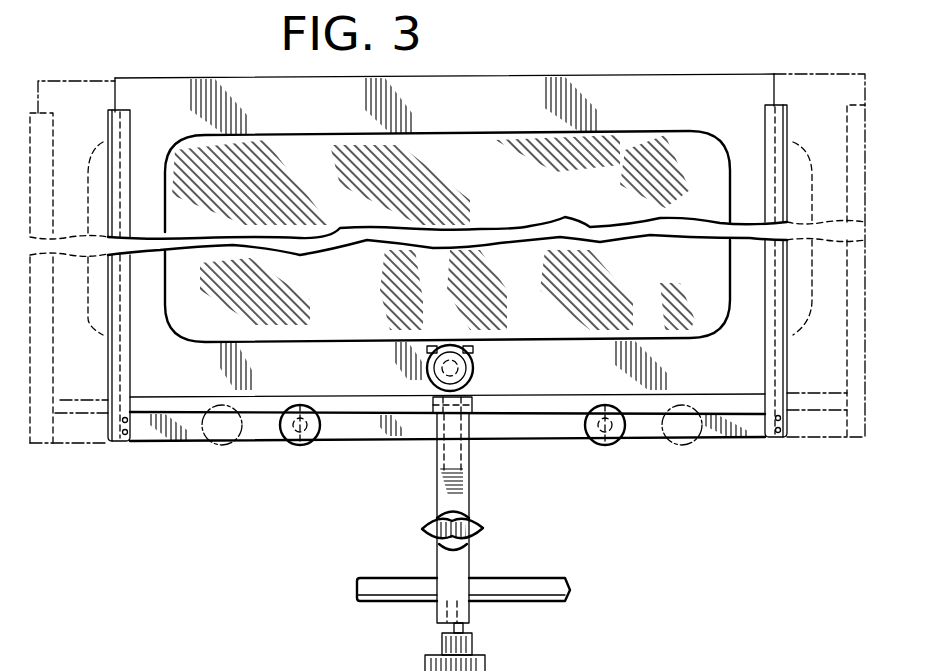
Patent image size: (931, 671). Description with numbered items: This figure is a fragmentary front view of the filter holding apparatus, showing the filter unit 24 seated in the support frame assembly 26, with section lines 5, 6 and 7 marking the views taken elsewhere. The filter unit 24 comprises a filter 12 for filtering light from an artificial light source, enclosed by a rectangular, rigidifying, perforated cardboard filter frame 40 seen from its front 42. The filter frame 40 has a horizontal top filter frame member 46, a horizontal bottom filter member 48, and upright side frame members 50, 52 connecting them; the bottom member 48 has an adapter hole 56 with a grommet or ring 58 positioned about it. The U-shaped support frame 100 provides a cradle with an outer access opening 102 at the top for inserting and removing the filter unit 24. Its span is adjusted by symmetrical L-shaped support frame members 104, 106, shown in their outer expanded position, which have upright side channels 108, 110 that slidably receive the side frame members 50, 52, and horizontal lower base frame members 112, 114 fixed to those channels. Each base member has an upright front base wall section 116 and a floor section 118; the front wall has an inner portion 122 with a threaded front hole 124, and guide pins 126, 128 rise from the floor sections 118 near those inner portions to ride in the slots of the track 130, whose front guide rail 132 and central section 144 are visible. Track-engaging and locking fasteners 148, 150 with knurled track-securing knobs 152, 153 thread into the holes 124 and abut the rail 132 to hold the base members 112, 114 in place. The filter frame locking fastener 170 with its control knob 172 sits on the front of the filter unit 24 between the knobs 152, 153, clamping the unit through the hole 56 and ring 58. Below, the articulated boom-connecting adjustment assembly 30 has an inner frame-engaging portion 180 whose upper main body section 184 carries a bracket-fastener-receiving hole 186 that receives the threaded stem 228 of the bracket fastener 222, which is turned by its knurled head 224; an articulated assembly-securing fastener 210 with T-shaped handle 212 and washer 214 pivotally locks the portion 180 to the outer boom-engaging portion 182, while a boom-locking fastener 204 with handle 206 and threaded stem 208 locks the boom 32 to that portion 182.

The filter 12 is at (418, 146).
The filter unit 24 is at (614, 126).
The support frame assembly 26 is at (108, 448).
The articulated boom-connecting adjustment unit and assembly 30 is at (478, 504).
The boom 32 is at (396, 582).
The filter frame 40 is at (115, 78).
The front 42 is at (150, 88).
The top filter frame member 46 is at (518, 84).
The bottom filter member 48 is at (255, 352).
The side frame member 50 is at (156, 281).
The side frame member 52 is at (745, 263).
The adapter hole 56 is at (470, 375).
The ring 58 is at (430, 364).
The support frame 100 is at (794, 130).
The outer access opening 102 is at (752, 98).
The L-shaped support frame member 104 is at (135, 357).
The L-shaped support frame member 106 is at (767, 353).
The side channel 108 is at (110, 114).
The side channel 110 is at (790, 176).
The lower base frame member 112 is at (186, 445).
The lower base frame member 114 is at (641, 440).
The front base wall section 116 is at (262, 443).
The floor section 118 is at (240, 445).
The inner portion 122 is at (318, 437).
The threaded front hole 124 is at (297, 424).
The guide pin 126 is at (306, 404).
The guide pin 128 is at (637, 395).
The track 130 is at (375, 447).
The front guide rail 132 is at (385, 415).
The central section 144 is at (485, 425).
The track-engaging and locking fastener 148 is at (306, 446).
The track-engaging and locking fastener 150 is at (600, 443).
The track-securing knob 152 is at (293, 406).
The track-securing knob 153 is at (595, 410).
The filter frame locking fastener 170 is at (468, 366).
The control knob 172 is at (432, 376).
The inner frame-engaging portion 180 is at (438, 510).
The outer boom-engaging portion 182 is at (440, 606).
The upper main body section 184 is at (446, 488).
The bracket-fastener-receiving hole 186 is at (448, 444).
The boom-locking fastener 204 is at (442, 655).
The handle 206 is at (485, 660).
The threaded stem 208 is at (466, 628).
The articulated assembly-securing fastener 210 is at (476, 528).
The handle 212 is at (422, 528).
The washer 214 is at (468, 548).
The bracket fastener 222 is at (474, 423).
The knurled head 224 is at (428, 413).
The threaded stem 228 is at (475, 452).
The section line 5 is at (80, 424).
The section line 6 is at (470, 305).
The section line 7 is at (622, 373).